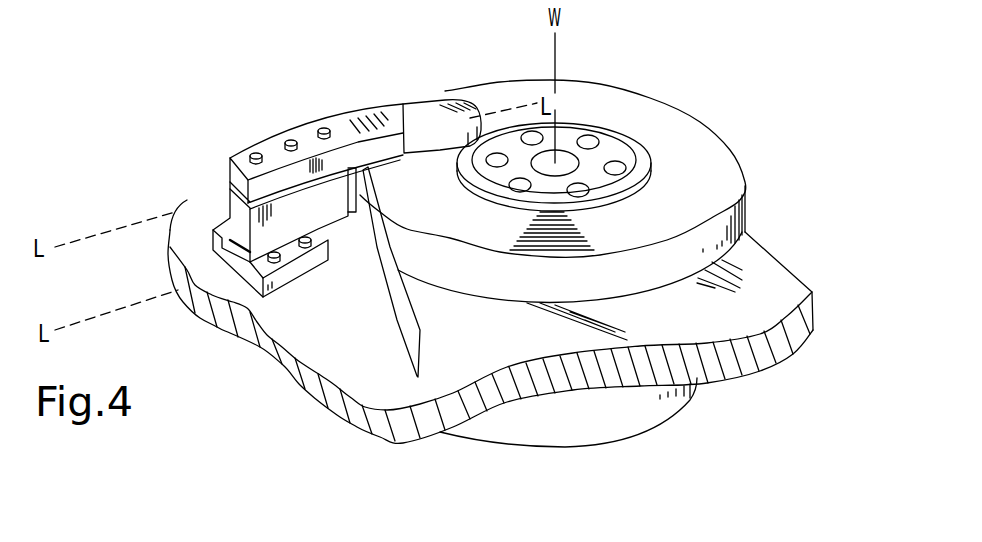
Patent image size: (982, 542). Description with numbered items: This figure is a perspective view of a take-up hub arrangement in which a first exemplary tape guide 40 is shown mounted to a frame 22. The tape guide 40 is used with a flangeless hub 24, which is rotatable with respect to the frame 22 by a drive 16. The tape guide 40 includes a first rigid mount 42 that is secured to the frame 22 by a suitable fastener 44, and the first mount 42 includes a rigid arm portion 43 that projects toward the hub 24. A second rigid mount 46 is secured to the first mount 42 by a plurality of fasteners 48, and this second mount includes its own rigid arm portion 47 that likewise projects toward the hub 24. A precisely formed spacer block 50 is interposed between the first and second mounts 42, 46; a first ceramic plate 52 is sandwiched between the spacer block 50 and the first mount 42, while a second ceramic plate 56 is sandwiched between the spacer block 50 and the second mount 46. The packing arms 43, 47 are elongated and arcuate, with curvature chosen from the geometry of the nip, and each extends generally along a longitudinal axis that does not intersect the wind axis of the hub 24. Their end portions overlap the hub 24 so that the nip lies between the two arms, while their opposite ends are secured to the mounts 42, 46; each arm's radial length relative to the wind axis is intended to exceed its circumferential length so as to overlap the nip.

The drive 16 is at (620, 420).
The frame 22 is at (347, 363).
The flangeless hub 24 is at (567, 133).
The tape guide 40 is at (191, 166).
The first rigid mount 42 is at (240, 260).
The rigid arm portion 43 is at (342, 232).
The fastener 44 is at (305, 250).
The second rigid mount 46 is at (274, 153).
The rigid arm portion 47 is at (358, 120).
The fasteners 48 is at (252, 153).
The spacer block 50 is at (240, 215).
The first ceramic plate 52 is at (388, 229).
The second ceramic plate 56 is at (405, 147).